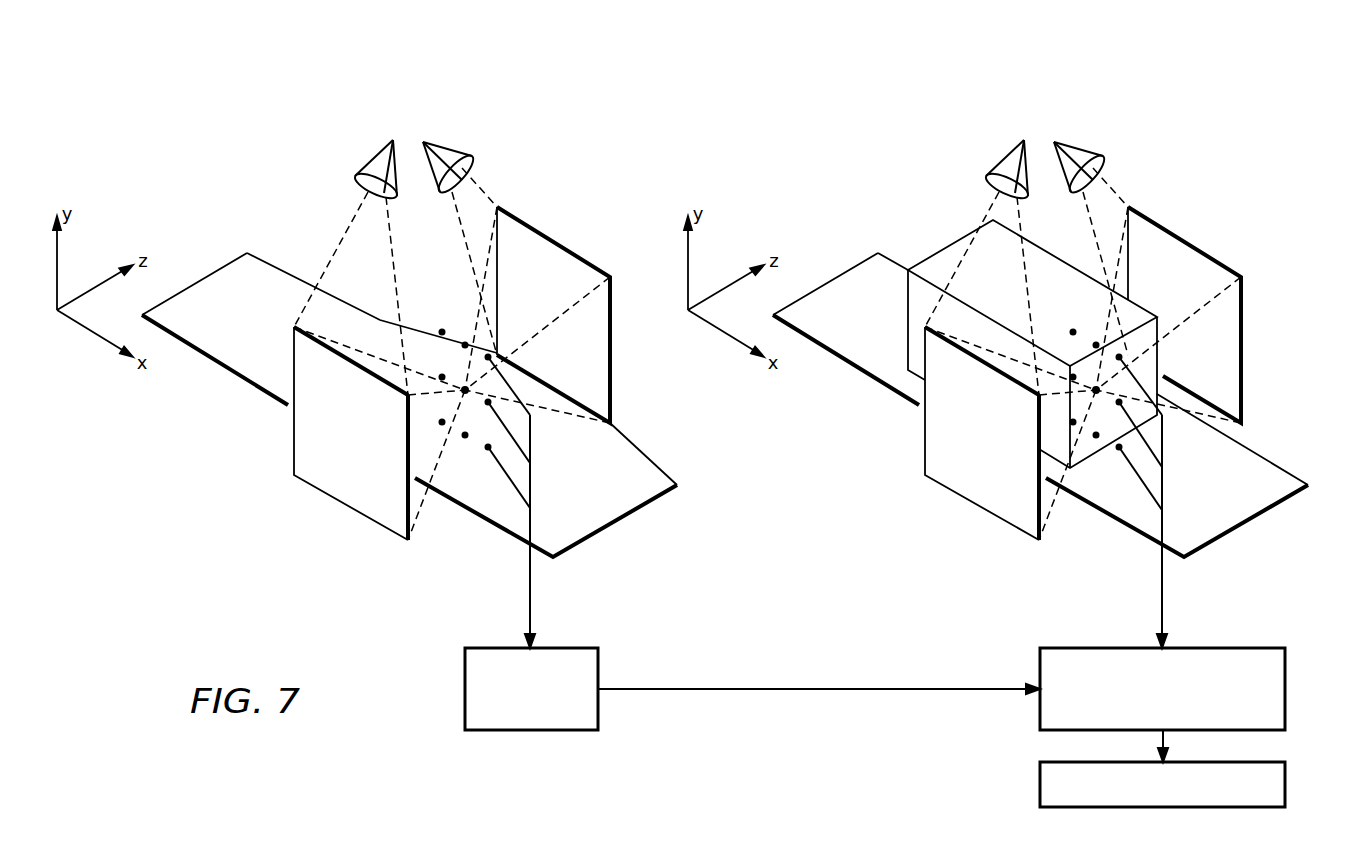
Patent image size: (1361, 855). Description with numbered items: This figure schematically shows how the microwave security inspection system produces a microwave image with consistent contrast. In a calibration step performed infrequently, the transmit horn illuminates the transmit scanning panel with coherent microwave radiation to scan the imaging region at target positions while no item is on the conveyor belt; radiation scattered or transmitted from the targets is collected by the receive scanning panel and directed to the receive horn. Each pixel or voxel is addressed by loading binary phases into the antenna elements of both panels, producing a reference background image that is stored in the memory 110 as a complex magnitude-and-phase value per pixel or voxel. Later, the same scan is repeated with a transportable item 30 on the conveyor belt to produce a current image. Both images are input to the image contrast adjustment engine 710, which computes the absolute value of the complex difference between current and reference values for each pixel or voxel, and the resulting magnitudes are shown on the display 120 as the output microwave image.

The transportable item 30 is at (1032, 328).
The memory 110 is at (463, 700).
The display 120 is at (1285, 784).
The image contrast adjustment engine 710 is at (1285, 699).